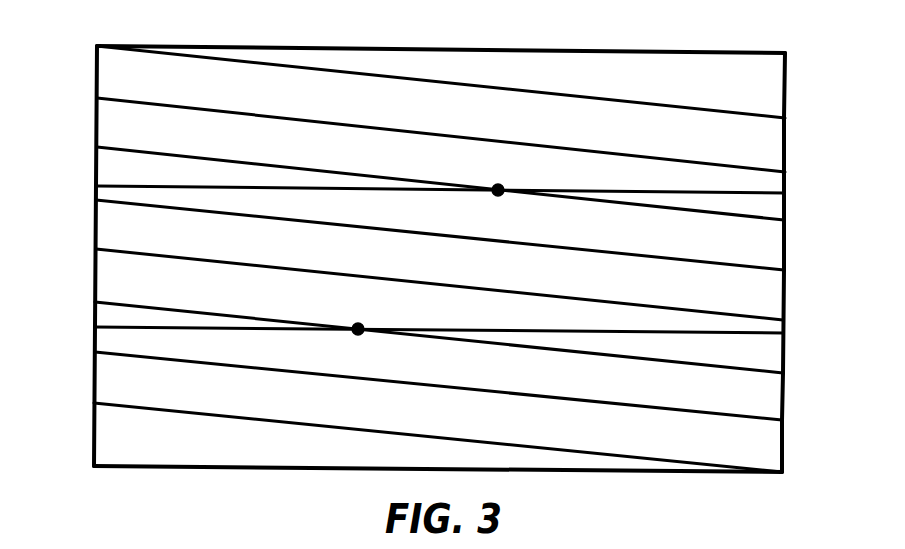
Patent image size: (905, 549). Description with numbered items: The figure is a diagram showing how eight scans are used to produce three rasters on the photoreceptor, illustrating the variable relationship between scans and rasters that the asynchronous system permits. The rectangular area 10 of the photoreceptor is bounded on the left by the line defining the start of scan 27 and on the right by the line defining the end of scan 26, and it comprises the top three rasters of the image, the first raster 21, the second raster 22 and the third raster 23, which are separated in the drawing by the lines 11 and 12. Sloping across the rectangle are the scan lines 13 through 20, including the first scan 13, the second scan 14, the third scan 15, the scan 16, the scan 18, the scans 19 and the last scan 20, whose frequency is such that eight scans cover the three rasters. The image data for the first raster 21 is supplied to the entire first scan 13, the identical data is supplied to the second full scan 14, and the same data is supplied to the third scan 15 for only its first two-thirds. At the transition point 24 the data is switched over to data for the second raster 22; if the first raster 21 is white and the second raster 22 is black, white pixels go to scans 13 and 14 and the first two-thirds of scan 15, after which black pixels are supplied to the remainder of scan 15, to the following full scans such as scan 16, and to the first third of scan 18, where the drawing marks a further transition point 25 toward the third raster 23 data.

The laminated structure 10 is at (677, 46).
The first transverse line 11 is at (778, 191).
The second transverse line 12 is at (750, 334).
The first scan 13 is at (601, 97).
The second scan 14 is at (411, 129).
The third scan 15 is at (215, 158).
The fourth scan 16 is at (500, 242).
The sixth scan 18 is at (143, 306).
The scan line 19 is at (405, 281).
The eighth scan 20 is at (415, 436).
The first raster 21 is at (768, 140).
The second raster 22 is at (762, 255).
The third raster 23 is at (760, 412).
The transition point 24 is at (505, 185).
The second junction point 25 is at (353, 323).
The end of scan line 26 is at (783, 461).
The start of scan line 27 is at (96, 222).